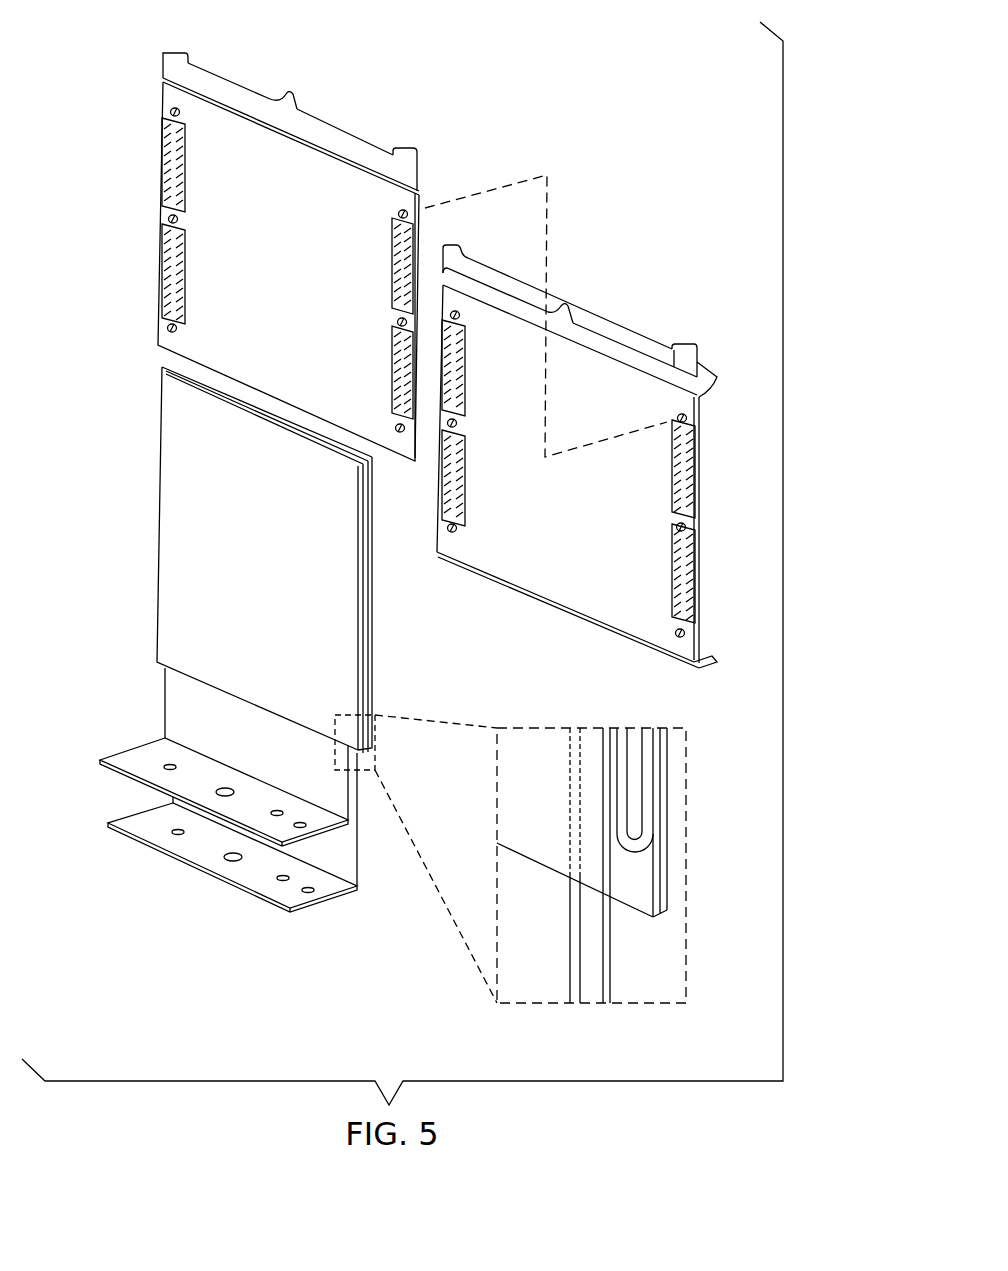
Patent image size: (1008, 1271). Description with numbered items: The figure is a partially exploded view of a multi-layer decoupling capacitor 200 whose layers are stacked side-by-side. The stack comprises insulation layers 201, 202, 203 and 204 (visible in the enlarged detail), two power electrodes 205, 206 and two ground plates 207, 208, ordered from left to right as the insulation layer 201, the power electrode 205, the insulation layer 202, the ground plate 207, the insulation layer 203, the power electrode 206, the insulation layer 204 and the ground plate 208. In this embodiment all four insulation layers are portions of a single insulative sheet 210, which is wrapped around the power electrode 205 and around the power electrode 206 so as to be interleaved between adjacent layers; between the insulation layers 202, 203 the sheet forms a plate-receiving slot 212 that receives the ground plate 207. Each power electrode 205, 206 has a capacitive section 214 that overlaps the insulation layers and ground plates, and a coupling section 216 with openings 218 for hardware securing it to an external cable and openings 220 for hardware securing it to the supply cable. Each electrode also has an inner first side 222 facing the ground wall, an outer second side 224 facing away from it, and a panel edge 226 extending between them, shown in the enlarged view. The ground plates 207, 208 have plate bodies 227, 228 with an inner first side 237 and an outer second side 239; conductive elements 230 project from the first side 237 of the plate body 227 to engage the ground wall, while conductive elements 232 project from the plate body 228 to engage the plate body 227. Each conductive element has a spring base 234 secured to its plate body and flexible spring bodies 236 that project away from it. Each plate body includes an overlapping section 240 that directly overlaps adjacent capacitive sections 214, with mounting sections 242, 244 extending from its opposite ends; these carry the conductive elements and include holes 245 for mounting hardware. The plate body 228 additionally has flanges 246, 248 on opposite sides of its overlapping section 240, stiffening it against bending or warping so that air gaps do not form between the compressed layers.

The decoupling capacitor 200 is at (572, 83).
The insulation layer 201 is at (505, 823).
The insulation layer 202 is at (628, 805).
The insulation layer 203 is at (638, 782).
The insulation layer 204 is at (665, 867).
The power electrode 205 is at (150, 702).
The power electrode 206 is at (367, 850).
The ground plate 207 is at (137, 153).
The ground plate 208 is at (720, 460).
The insulative sheet 210 is at (137, 423).
The plate-receiving slot 212 is at (366, 663).
The capacitive section 214 is at (235, 540).
The coupling section 216 is at (122, 760).
The openings 218 is at (173, 767).
The openings 220 is at (227, 792).
The first side 222 is at (300, 773).
The second side 224 is at (353, 803).
The panel edge 226 is at (636, 905).
The plate body 227 is at (242, 140).
The plate body 228 is at (613, 387).
The conductive elements 230 is at (165, 268).
The conductive elements 232 is at (455, 383).
The spring base 234 is at (168, 170).
The spring bodies 236 is at (165, 125).
The first side 237 is at (603, 605).
The second side 239 is at (338, 151).
The overlapping section 240 is at (290, 92).
The mounting section 242 is at (176, 53).
The mounting section 244 is at (405, 148).
The holes 245 is at (168, 327).
The flange 246 is at (650, 350).
The flange 248 is at (716, 665).